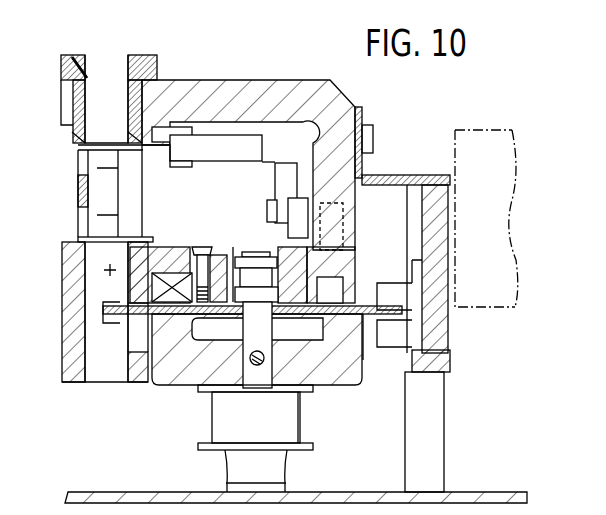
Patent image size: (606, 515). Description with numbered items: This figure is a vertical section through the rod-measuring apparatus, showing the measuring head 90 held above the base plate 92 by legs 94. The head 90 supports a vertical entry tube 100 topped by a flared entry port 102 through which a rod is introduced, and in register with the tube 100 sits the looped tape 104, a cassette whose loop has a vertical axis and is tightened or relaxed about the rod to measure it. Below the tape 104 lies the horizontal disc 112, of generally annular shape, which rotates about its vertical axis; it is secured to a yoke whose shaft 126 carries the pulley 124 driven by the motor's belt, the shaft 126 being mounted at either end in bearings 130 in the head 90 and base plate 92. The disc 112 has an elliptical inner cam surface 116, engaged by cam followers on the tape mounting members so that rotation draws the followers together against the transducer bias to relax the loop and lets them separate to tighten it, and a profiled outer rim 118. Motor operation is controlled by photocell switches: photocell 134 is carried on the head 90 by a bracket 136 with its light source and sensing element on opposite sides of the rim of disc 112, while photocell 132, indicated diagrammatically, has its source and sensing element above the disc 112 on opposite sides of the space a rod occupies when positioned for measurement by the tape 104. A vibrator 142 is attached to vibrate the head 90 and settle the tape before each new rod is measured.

The measuring head 90 is at (220, 69).
The base plate 92 is at (143, 490).
The legs 94 is at (430, 402).
The vertical entry tube 100 is at (117, 90).
The flared entry port 102 is at (83, 64).
The looped tape 104 is at (100, 188).
The horizontal disc 112 is at (121, 318).
The elliptical inner cam surface 116 is at (212, 326).
The profiled outer rim 118 is at (403, 313).
The pulley 124 is at (277, 419).
The shaft 126 is at (262, 343).
The bearings 130 is at (247, 263).
The photocell switch 132 is at (104, 270).
The photocell switch 134 is at (395, 296).
The bracket 136 is at (405, 177).
The vibrator 142 is at (482, 155).